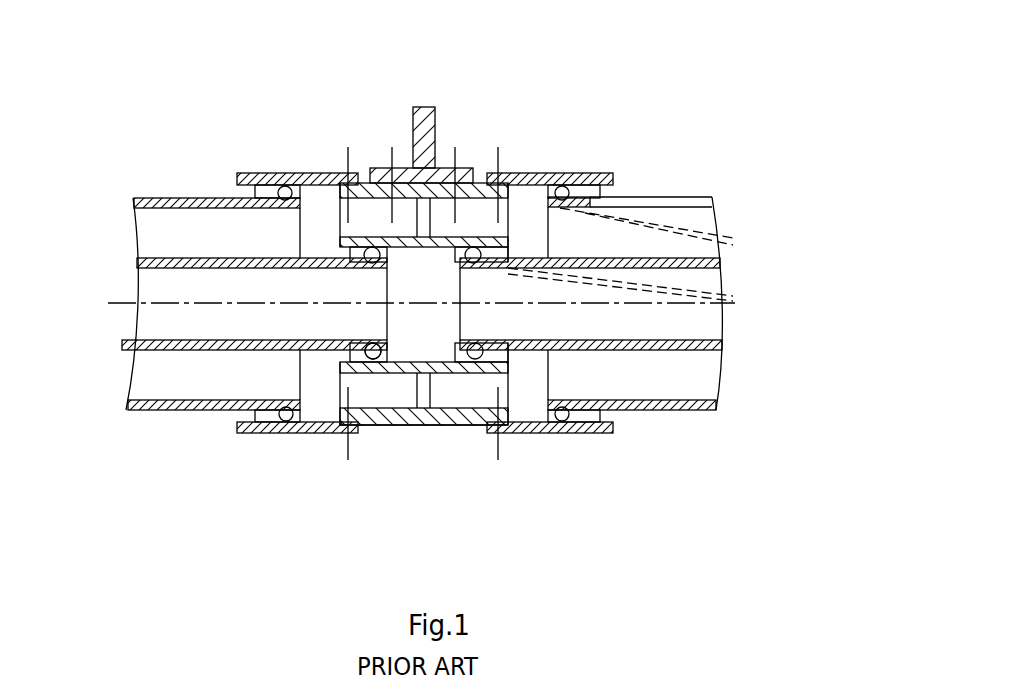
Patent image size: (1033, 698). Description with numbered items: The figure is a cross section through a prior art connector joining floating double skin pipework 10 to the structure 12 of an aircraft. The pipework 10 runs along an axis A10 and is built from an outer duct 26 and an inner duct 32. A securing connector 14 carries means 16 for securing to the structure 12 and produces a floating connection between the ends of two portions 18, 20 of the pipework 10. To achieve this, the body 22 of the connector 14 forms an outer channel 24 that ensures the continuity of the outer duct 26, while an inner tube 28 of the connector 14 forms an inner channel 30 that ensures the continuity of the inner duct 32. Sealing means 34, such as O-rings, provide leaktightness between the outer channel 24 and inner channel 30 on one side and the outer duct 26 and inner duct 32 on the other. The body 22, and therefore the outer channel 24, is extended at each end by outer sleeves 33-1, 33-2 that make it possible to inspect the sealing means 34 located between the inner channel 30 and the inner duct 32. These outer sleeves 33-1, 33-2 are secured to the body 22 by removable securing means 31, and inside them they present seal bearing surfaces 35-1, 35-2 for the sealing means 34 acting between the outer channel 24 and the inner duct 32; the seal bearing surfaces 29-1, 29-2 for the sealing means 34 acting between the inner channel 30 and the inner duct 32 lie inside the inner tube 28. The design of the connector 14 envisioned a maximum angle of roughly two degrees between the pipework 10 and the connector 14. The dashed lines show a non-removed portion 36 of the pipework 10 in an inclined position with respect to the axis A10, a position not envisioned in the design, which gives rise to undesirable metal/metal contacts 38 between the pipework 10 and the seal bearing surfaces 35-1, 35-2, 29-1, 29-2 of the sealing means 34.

The axis of the pipework A10 is at (121, 302).
The floating double skin pipework 10 is at (702, 193).
The structure 12 is at (438, 115).
The securing connector 14 is at (389, 430).
The means for securing 16 is at (393, 157).
The portion of the floating double skin pipework 18 is at (681, 413).
The portion of the floating double skin pipework 20 is at (149, 414).
The body 22 is at (413, 430).
The outer channel 24 is at (437, 345).
The outer duct 26 is at (207, 406).
The inner tube 28 is at (378, 425).
The seal bearing surface 29-1 is at (492, 253).
The seal bearing surface 29-2 is at (350, 360).
The inner channel 30 is at (425, 398).
The removable securing means 31 is at (350, 157).
The inner duct 32 is at (627, 332).
The outer sleeve 33-1 is at (599, 172).
The outer sleeve 33-2 is at (270, 173).
The sealing means 34 is at (366, 241).
The seal bearing surface 35-1 is at (614, 192).
The seal bearing surface 35-2 is at (240, 193).
The non-removed portion 36 is at (720, 229).
The metal/metal contacts 38 is at (456, 241).